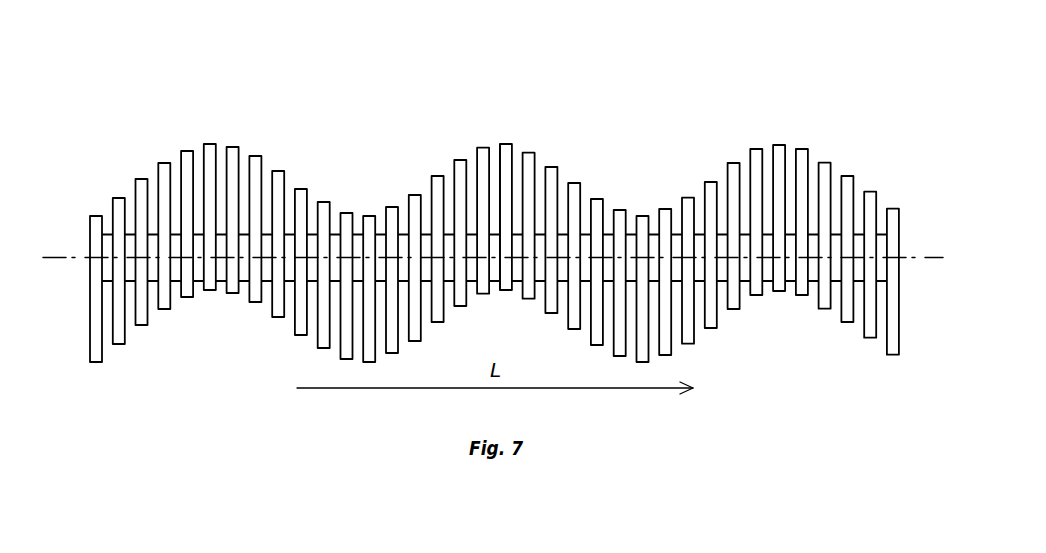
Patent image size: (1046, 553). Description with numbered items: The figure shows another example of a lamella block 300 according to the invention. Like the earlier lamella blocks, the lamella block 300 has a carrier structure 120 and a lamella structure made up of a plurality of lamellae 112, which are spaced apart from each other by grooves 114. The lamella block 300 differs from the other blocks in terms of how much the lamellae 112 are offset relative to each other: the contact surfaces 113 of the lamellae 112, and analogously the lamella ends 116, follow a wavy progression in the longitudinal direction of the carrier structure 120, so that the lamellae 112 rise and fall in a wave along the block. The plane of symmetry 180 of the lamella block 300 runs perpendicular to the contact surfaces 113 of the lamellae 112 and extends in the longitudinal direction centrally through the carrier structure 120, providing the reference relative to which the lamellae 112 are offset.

The lamella block 300 is at (493, 203).
The lamella 112 is at (505, 157).
The contact surface 113 is at (505, 175).
The groove 114 is at (540, 177).
The lamella end 116 is at (367, 215).
The carrier structure 120 is at (630, 245).
The plane of symmetry 180 is at (928, 257).